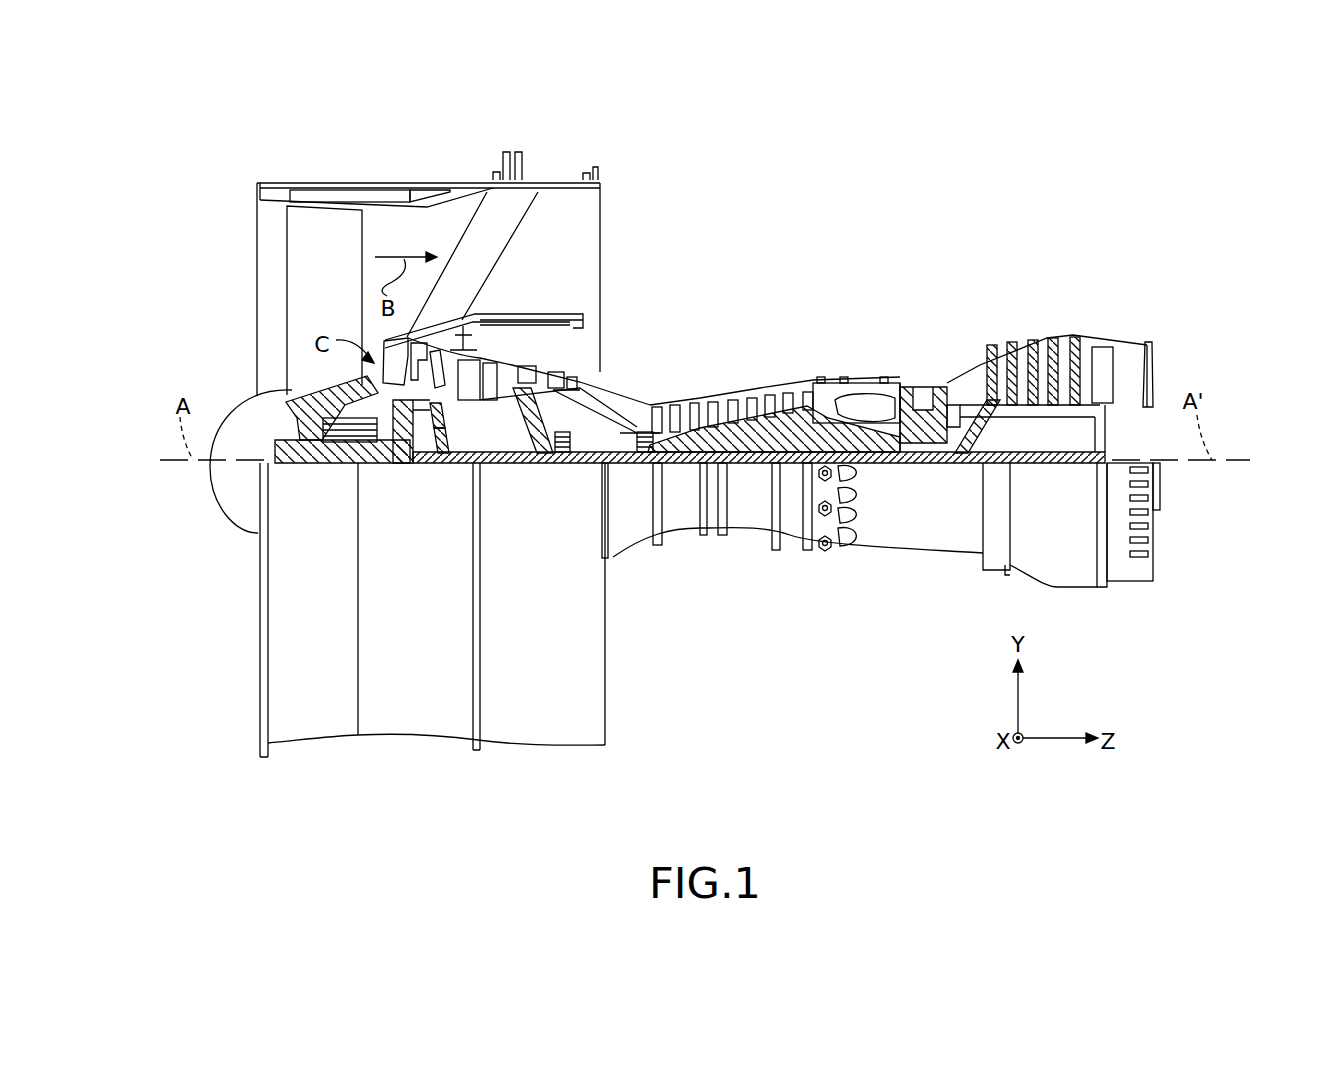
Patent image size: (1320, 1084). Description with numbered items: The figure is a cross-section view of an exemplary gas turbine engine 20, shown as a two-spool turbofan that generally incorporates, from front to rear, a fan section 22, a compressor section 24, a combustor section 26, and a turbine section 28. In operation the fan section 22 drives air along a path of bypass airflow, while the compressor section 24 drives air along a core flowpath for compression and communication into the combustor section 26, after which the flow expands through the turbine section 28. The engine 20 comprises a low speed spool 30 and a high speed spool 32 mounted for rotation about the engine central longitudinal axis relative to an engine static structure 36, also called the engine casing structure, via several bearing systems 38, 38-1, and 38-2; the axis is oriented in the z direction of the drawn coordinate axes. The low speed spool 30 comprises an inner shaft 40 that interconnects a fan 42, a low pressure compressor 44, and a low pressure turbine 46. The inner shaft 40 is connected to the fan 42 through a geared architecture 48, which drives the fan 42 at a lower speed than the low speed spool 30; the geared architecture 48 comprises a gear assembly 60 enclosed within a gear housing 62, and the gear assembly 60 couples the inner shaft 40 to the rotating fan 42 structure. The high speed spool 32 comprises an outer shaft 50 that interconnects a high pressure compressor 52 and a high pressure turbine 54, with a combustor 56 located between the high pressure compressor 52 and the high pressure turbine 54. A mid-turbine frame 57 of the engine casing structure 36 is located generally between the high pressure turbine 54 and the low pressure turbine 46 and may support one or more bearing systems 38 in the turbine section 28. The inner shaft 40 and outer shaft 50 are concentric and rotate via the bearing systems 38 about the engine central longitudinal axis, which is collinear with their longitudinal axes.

The gas turbine engine 20 is at (903, 170).
The fan section 22 is at (450, 170).
The compressor section 24 is at (475, 282).
The combustor section 26 is at (905, 280).
The turbine section 28 is at (1095, 282).
The low speed spool 30 is at (752, 472).
The high speed spool 32 is at (800, 420).
The engine static structure 36 is at (792, 525).
The bearing system 38 is at (965, 430).
The bearing system 38-1 is at (333, 460).
The bearing system 38-2 is at (565, 462).
The inner shaft 40 is at (622, 463).
The fan 42 is at (300, 311).
The low pressure compressor 44 is at (540, 370).
The low pressure turbine 46 is at (1043, 350).
The geared architecture 48 is at (430, 498).
The outer shaft 50 is at (867, 448).
The high pressure compressor 52 is at (767, 427).
The high pressure turbine 54 is at (920, 385).
The combustor 56 is at (863, 400).
The mid-turbine frame 57 is at (953, 385).
The gear assembly 60 is at (453, 432).
The gear housing 62 is at (453, 410).